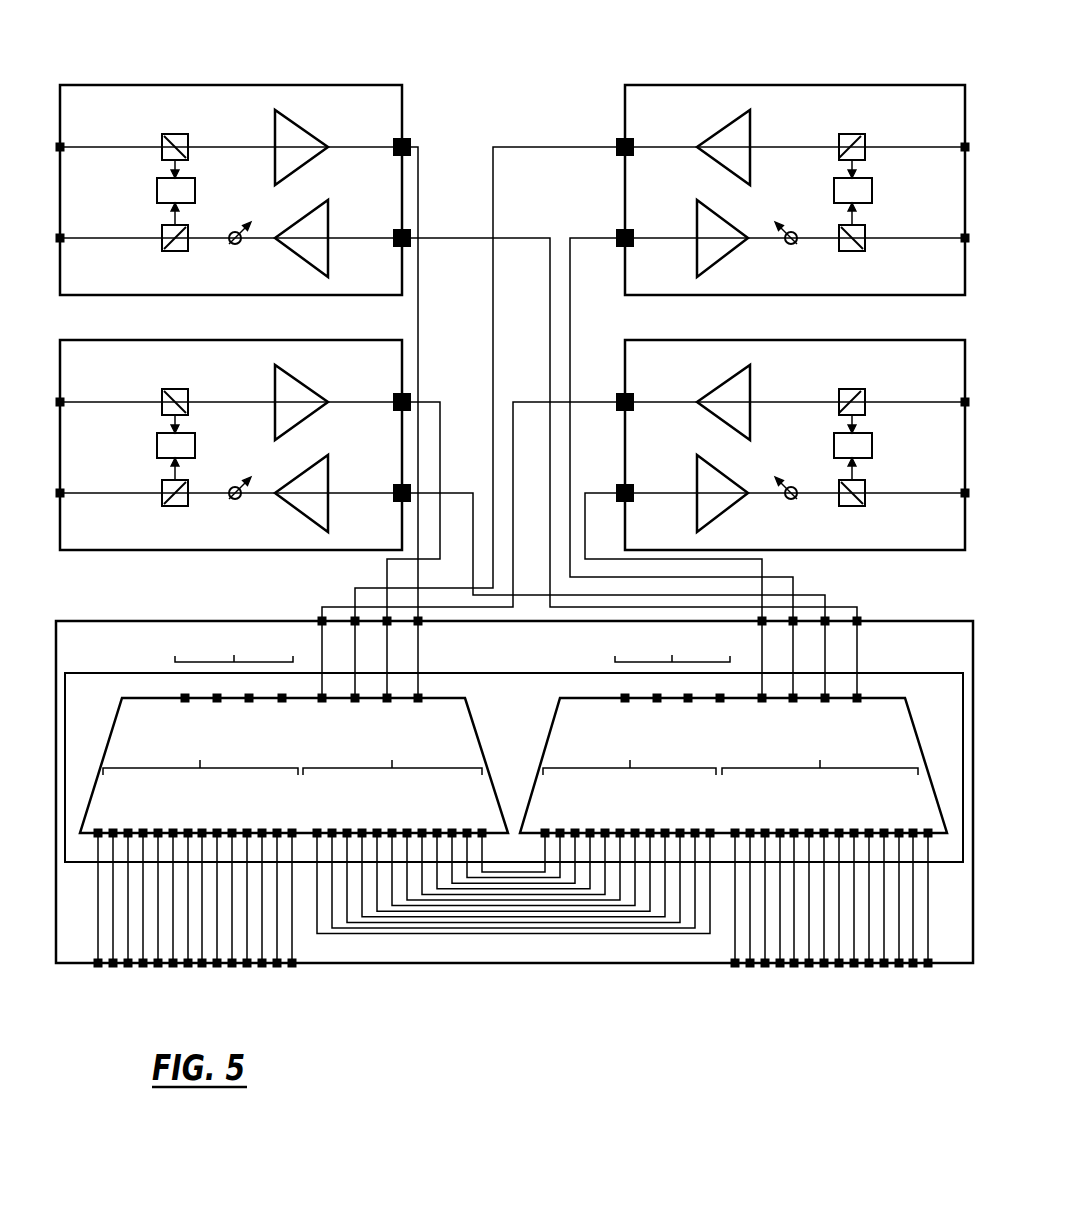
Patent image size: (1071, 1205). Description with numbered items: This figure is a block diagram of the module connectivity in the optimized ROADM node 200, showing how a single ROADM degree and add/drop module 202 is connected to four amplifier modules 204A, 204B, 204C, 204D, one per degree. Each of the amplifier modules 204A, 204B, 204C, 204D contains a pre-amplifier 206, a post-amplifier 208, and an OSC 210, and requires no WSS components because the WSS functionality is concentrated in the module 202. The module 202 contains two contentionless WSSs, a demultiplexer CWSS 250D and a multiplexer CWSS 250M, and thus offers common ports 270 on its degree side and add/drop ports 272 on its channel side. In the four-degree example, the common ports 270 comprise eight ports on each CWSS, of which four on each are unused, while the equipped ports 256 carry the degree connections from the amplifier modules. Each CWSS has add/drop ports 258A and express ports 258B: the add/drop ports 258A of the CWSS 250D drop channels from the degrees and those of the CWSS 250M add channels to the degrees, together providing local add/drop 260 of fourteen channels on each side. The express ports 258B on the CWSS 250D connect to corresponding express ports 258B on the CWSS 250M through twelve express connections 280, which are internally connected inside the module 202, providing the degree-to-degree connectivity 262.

The optimized ROADM node 200 is at (547, 32).
The ROADM degree and add/drop module 202 is at (883, 620).
The amplifier module 204A is at (87, 85).
The amplifier module 204B is at (87, 340).
The amplifier module 204C is at (872, 85).
The amplifier module 204D is at (872, 340).
The pre-amplifier 206 is at (312, 133).
The post-amplifier 208 is at (330, 215).
The OSC 210 is at (195, 182).
The CWSS 250D is at (323, 761).
The CWSS 250M is at (773, 761).
The degree-side ports of WSS 256 is at (315, 729).
The add/drop ports 258A is at (510, 754).
The express ports 258B is at (509, 754).
The local add/drop 260 is at (844, 1021).
The degree-to-degree connectivity 262 is at (530, 987).
The common ports 270 is at (462, 642).
The add/drop ports 272 is at (341, 992).
The express connections 280 is at (648, 957).